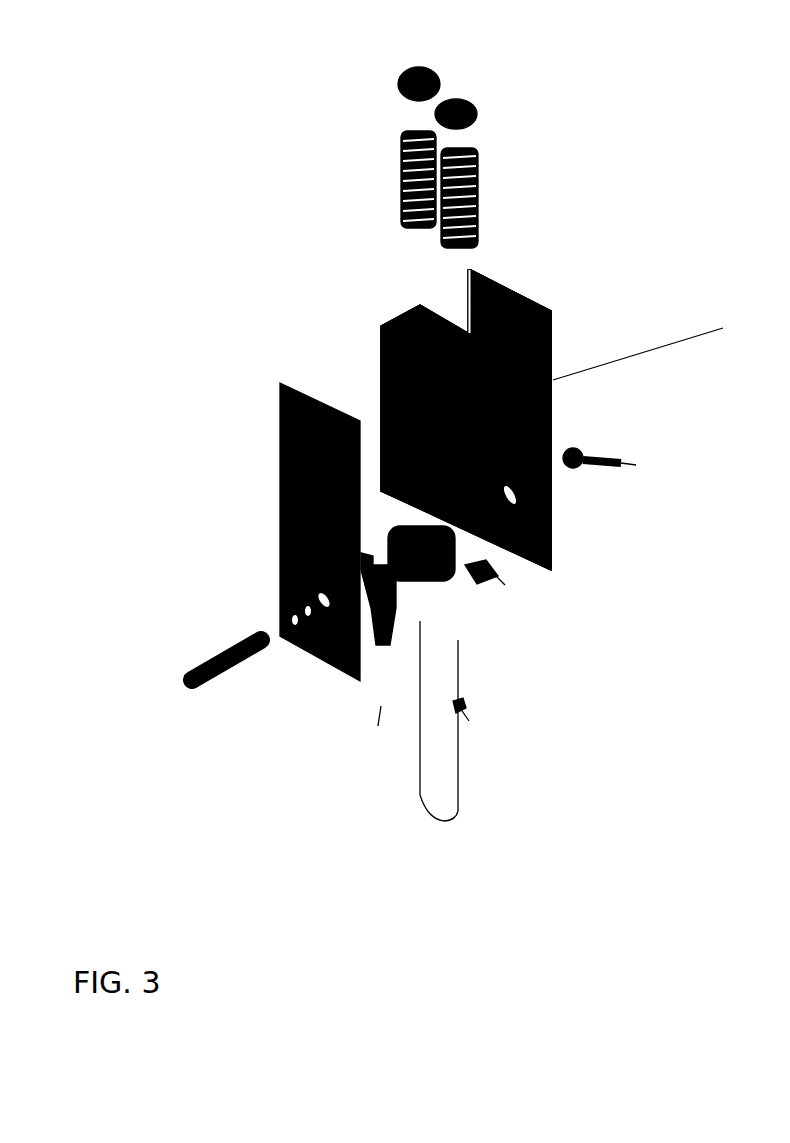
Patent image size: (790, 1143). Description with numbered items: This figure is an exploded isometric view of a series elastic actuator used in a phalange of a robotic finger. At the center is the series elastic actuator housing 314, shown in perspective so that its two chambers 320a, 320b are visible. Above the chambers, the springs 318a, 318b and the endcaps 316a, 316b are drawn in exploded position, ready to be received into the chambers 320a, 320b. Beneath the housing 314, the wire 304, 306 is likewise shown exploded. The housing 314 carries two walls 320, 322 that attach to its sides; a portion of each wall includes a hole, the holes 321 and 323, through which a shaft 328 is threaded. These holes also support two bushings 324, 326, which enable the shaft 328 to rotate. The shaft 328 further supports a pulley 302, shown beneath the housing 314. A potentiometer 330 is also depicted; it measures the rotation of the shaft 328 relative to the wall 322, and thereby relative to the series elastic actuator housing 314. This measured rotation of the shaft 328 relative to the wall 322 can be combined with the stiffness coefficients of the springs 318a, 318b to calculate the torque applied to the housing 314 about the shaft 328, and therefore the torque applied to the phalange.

The pulley 302 is at (437, 557).
The wire 304 is at (450, 662).
The wire 306 is at (407, 675).
The series elastic actuator housing 314 is at (373, 345).
The endcap 316a is at (455, 90).
The endcap 316b is at (390, 78).
The spring 318a is at (468, 195).
The spring 318b is at (395, 165).
The wall 320 is at (543, 415).
The chamber 320a is at (439, 312).
The chamber 320b is at (392, 308).
The hole 321 is at (545, 518).
The wall 322 is at (272, 443).
The hole 323 is at (272, 568).
The bushing 324 is at (585, 462).
The bushing 326 is at (272, 608).
The shaft 328 is at (232, 665).
The potentiometer 330 is at (385, 574).